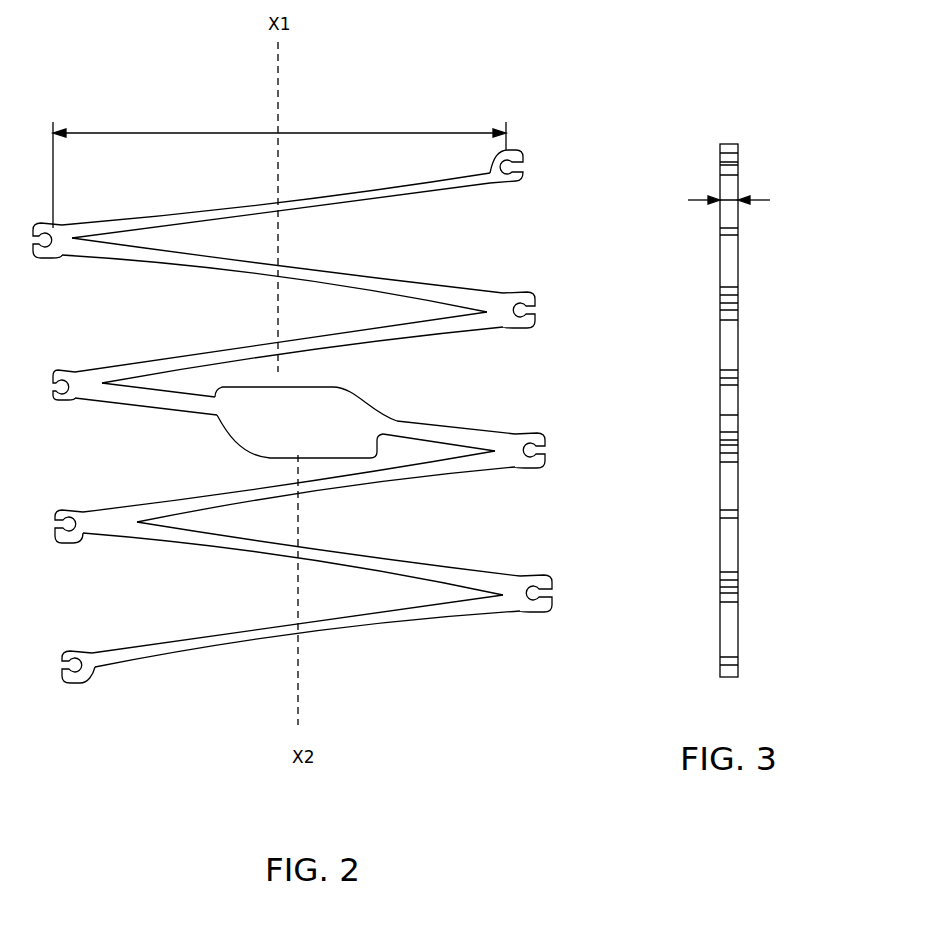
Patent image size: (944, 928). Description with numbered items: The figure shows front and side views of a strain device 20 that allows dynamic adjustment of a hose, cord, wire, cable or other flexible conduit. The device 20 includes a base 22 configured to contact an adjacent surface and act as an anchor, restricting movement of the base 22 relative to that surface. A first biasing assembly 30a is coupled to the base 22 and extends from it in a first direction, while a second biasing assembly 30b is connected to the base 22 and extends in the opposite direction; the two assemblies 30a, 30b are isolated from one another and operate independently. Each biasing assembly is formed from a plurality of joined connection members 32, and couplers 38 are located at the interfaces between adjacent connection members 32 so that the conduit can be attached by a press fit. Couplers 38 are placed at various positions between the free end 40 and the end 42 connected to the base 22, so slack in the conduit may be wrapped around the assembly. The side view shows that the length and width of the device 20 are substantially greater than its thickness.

In FIG. 2, the strain device 20 is at (126, 104).
In FIG. 3, the strain device 20 is at (665, 132).
In FIG. 2, the base 22 is at (340, 401).
In FIG. 2, the first biasing assembly 30a is at (458, 237).
In FIG. 2, the second biasing assembly 30b is at (580, 592).
In FIG. 2, the connection member 32 is at (393, 624).
In FIG. 2, the coupler 38 is at (67, 400).
In FIG. 2, the free end 40 is at (491, 163).
In FIG. 2, the end connected to the base 42 is at (208, 400).